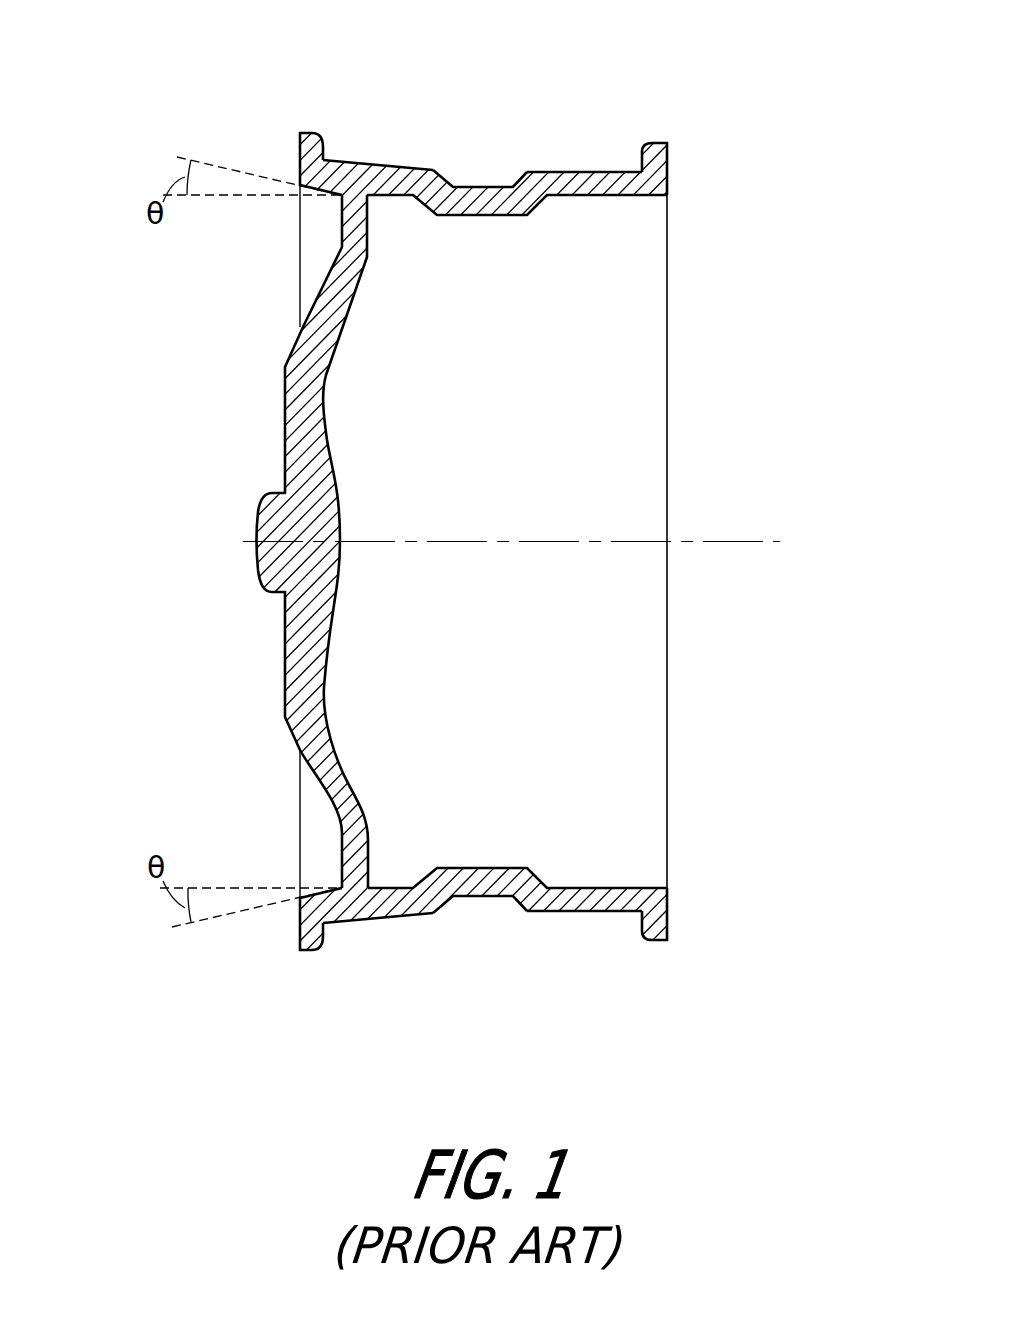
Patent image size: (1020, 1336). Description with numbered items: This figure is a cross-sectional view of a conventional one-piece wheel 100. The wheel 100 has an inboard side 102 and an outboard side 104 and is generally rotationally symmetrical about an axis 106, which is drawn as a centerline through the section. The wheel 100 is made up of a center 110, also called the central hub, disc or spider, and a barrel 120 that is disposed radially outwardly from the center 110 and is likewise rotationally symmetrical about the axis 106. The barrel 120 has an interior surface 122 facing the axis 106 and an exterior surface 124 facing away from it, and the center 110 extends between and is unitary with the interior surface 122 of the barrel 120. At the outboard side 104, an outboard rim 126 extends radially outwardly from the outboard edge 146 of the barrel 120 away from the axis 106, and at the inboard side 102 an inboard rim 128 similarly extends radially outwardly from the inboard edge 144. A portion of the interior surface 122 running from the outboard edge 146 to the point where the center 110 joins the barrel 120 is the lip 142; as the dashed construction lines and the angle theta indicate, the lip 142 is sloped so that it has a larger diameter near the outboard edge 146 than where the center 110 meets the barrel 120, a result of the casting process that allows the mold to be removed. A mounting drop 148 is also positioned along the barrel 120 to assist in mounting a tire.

The one-piece wheel 100 is at (370, 93).
The inboard side 102 is at (852, 397).
The outboard side 104 is at (148, 353).
The axis 106 is at (757, 541).
The center 110 is at (277, 446).
The barrel 120 is at (418, 132).
The interior surface 122 is at (313, 207).
The exterior surface 124 is at (442, 167).
The outboard rim 126 is at (298, 130).
The inboard rim 128 is at (680, 133).
The lip 142 is at (317, 877).
The inboard edge 144 is at (667, 762).
The outboard edge 146 is at (300, 773).
The mounting drop 148 is at (485, 906).